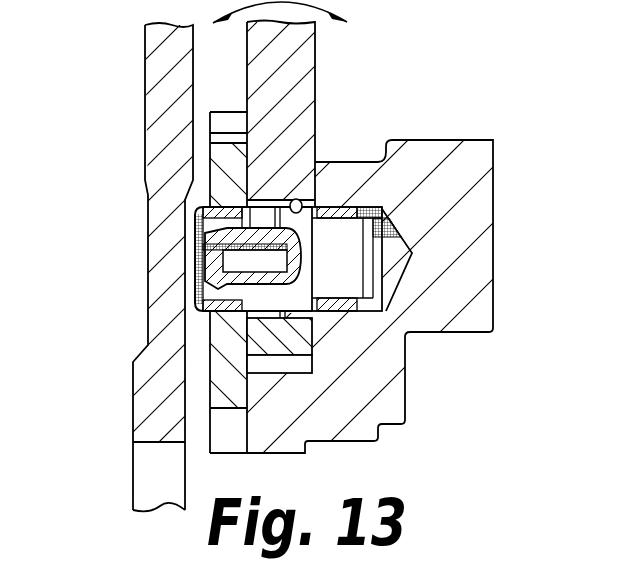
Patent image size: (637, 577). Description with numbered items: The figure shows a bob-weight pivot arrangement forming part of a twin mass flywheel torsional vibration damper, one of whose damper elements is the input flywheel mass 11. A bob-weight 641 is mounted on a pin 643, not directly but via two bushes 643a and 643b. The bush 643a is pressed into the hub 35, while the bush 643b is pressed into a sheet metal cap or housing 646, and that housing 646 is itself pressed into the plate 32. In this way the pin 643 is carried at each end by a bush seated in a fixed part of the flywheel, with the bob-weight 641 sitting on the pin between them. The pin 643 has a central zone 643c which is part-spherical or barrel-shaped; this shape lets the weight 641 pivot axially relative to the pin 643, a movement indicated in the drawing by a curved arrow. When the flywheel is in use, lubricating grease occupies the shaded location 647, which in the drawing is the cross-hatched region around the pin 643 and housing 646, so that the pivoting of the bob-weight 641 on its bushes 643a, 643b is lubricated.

The input flywheel mass 11 is at (160, 80).
The plate 32 is at (227, 372).
The hub 35 is at (475, 205).
The bob-weight 641 is at (290, 82).
The pin 643 is at (343, 273).
The bush 643a is at (376, 300).
The bush 643b is at (208, 303).
The central zone 643c is at (297, 200).
The sheet metal cap or housing 646 is at (197, 298).
The shaded location 647 is at (515, 257).